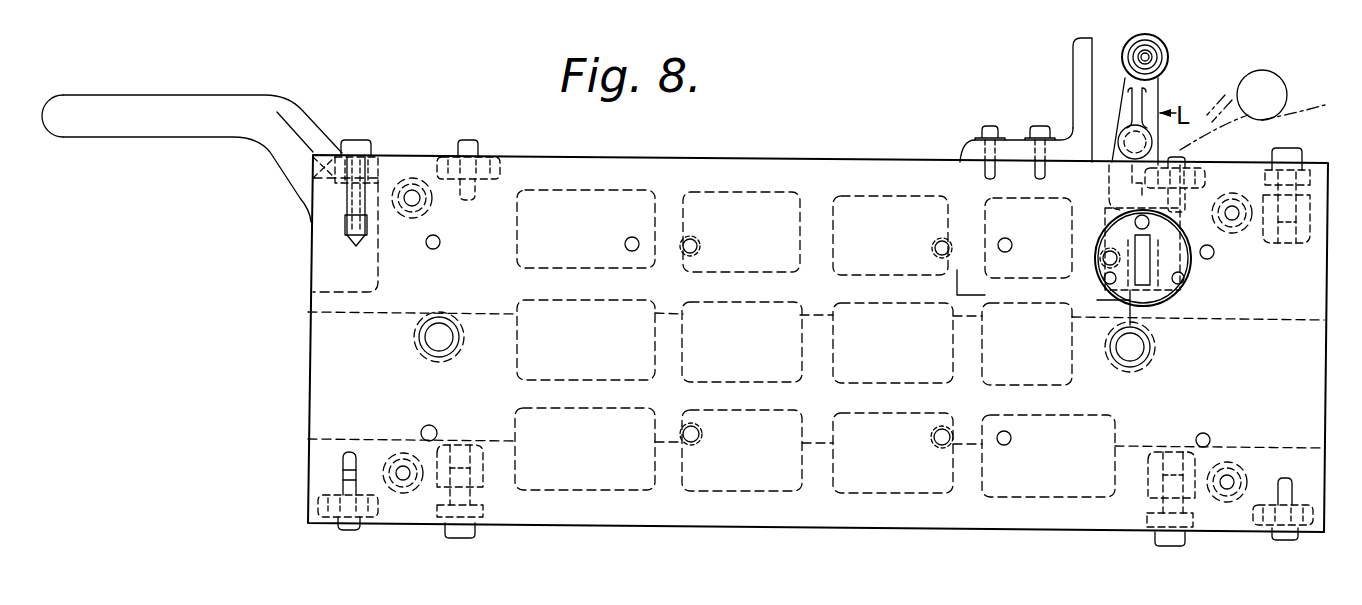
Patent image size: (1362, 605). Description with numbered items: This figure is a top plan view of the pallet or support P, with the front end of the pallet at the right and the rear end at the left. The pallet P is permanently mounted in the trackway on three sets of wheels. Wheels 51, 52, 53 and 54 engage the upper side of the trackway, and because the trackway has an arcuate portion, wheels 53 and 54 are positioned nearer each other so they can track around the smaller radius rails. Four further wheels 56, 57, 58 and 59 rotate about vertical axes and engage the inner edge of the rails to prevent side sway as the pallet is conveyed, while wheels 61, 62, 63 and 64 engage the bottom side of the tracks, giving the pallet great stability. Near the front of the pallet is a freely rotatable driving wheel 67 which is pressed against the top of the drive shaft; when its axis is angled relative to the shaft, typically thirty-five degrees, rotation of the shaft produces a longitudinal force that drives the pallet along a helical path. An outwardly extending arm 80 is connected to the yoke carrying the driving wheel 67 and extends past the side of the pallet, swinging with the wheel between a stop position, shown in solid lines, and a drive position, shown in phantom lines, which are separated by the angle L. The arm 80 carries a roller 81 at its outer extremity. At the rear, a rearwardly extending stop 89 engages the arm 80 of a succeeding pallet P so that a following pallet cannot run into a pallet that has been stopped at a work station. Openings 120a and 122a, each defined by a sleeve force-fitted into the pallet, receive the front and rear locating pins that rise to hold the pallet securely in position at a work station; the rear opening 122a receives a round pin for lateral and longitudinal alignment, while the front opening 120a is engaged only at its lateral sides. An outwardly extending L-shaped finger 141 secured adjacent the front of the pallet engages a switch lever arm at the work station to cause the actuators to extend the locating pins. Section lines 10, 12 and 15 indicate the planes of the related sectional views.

The pallet P is at (290, 343).
The rearwardly extending stop 89 is at (163, 140).
The wheel 63 is at (373, 160).
The wheel 58 is at (418, 180).
The wheel 53 is at (505, 162).
The section line 12 is at (352, 127).
The section line 15 is at (960, 92).
The section line 10 is at (1232, 120).
The L-shaped finger 141 is at (1072, 95).
The arm 80 is at (1120, 95).
The roller 81 is at (1168, 70).
The wheel 54 is at (1210, 178).
The wheel 64 is at (1305, 168).
The wheel 59 is at (1240, 235).
The driving wheel 67 is at (1182, 280).
The opening 120a is at (1140, 348).
The opening 122a is at (432, 338).
The wheel 52 is at (318, 512).
The wheel 57 is at (408, 497).
The wheel 62 is at (487, 512).
The wheel 61 is at (1120, 522).
The wheel 56 is at (1245, 477).
The wheel 51 is at (1308, 530).